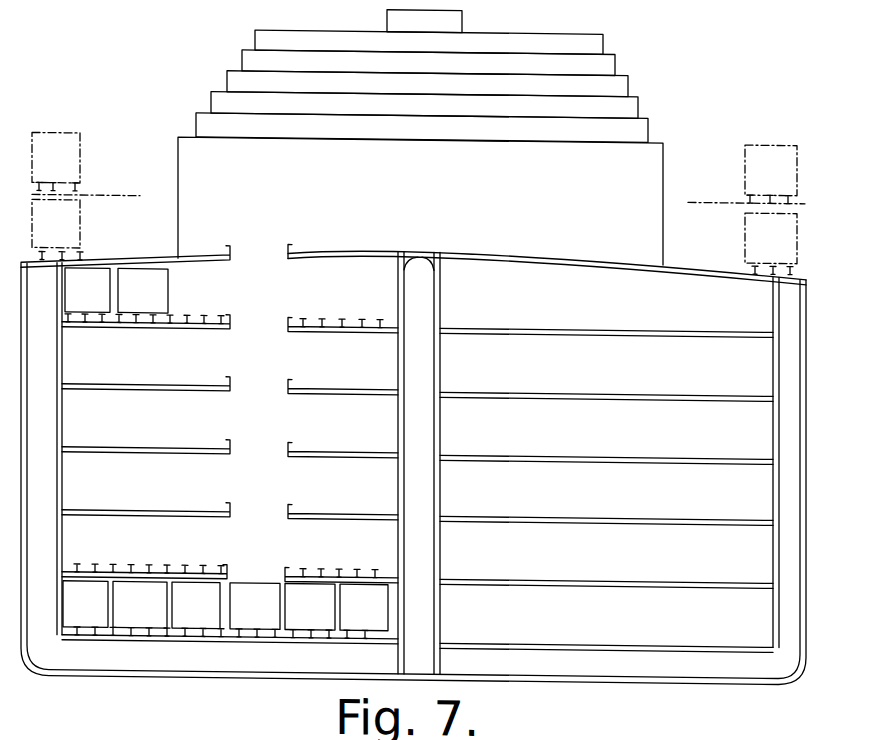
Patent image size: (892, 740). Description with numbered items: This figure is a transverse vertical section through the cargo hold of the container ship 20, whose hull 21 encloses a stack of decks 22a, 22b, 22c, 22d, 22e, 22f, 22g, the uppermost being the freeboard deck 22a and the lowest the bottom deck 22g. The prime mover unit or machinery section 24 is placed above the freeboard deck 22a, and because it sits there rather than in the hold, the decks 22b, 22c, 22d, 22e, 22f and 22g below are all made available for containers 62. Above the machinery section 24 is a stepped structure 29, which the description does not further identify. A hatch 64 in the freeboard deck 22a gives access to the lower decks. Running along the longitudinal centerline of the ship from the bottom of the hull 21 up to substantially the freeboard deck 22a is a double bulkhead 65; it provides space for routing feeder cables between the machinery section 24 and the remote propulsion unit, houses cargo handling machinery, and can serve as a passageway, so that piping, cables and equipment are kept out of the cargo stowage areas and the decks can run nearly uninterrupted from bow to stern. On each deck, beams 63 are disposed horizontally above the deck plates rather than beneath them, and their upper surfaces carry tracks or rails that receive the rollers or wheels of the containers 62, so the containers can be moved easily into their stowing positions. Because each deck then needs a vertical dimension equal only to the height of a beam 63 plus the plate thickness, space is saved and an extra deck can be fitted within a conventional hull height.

The container ship 20 is at (557, 680).
The hull 21 is at (244, 672).
The freeboard deck 22a is at (214, 249).
The deck 22b is at (196, 320).
The deck 22c is at (203, 383).
The deck 22d is at (203, 446).
The deck 22e is at (203, 509).
The deck 22f is at (201, 571).
The bottom deck 22g is at (197, 634).
The machinery section 24 is at (651, 195).
The stepped structure 29 is at (643, 72).
The container 62 is at (72, 156).
The beam 63 is at (77, 188).
The hatch 64 is at (288, 250).
The double bulkhead 65 is at (417, 255).